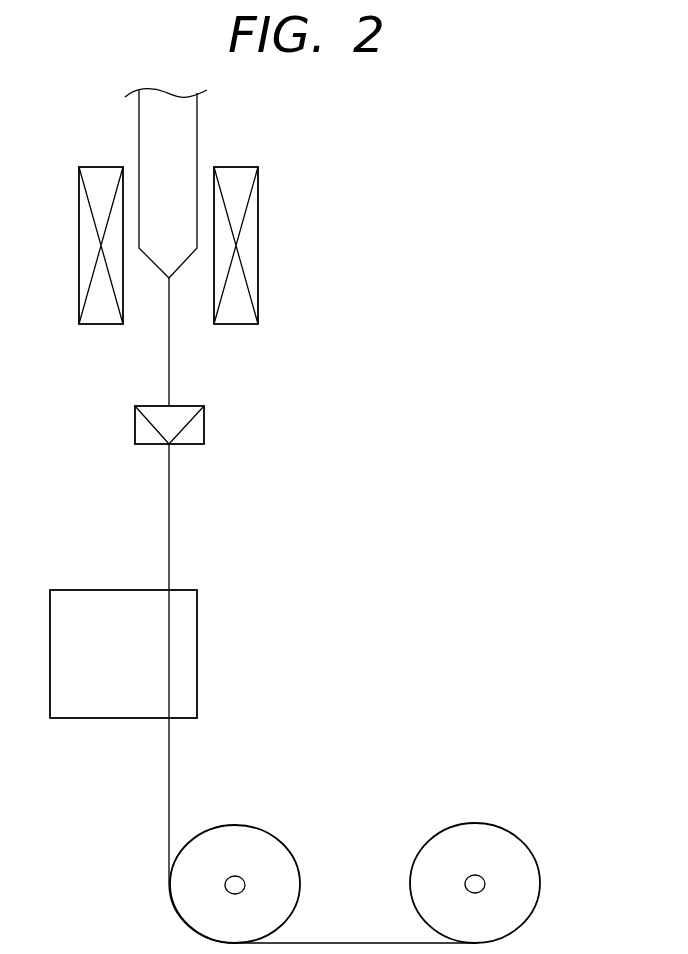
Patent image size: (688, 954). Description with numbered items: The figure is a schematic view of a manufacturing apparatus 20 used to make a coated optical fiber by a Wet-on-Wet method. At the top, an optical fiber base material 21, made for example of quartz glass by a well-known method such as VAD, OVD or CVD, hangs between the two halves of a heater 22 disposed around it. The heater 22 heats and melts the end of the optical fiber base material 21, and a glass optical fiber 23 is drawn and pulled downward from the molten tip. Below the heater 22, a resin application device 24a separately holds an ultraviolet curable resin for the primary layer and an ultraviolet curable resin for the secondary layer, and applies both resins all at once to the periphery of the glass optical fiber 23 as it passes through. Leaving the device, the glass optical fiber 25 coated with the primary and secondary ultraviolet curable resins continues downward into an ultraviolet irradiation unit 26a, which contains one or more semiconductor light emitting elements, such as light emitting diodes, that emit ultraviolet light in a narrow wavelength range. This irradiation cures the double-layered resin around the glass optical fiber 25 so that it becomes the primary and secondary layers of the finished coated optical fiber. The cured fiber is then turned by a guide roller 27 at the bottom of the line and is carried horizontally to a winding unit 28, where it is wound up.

The manufacturing apparatus 20 is at (77, 89).
The optical fiber base material 21 is at (193, 123).
The heater 22 is at (253, 232).
The glass optical fiber 23 is at (170, 371).
The resin application device 24a is at (204, 425).
The glass optical fiber coated with ultraviolet curable resin 25 is at (170, 519).
The ultraviolet irradiation unit 26a is at (197, 633).
The guide roller 27 is at (247, 829).
The winding unit 28 is at (500, 833).